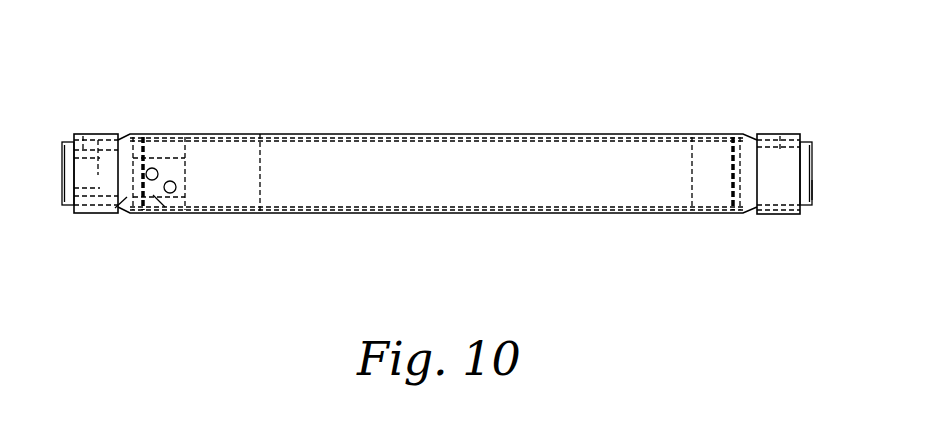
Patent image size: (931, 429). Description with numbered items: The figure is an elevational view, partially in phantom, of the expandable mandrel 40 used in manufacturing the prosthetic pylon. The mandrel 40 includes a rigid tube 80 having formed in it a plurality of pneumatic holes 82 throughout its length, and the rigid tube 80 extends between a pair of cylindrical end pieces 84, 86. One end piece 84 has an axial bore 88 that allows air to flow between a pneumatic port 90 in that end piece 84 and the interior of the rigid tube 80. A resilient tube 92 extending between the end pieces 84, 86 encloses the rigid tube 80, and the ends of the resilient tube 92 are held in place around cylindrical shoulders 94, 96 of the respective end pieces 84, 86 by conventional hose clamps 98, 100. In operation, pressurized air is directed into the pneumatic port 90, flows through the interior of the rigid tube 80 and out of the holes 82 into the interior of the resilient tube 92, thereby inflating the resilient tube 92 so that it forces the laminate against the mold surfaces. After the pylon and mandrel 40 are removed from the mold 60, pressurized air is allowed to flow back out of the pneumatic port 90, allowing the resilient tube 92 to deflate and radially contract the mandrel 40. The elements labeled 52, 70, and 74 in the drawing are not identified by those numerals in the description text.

The mandrel 40 is at (439, 62).
The tube body 52 is at (562, 215).
The mold 60 is at (263, 170).
The internal piston element 70 is at (655, 215).
The end fitting face 74 is at (812, 193).
The rigid tube 80 is at (170, 210).
The pneumatic holes 82 is at (157, 172).
The cylindrical end piece 84 is at (115, 212).
The cylindrical end piece 86 is at (812, 177).
The axial bore 88 is at (97, 173).
The pneumatic port 90 is at (63, 178).
The resilient tube 92 is at (433, 215).
The cylindrical shoulder 94 is at (68, 140).
The cylindrical shoulder 96 is at (783, 142).
The hose clamp 98 is at (83, 134).
The hose clamp 100 is at (772, 143).